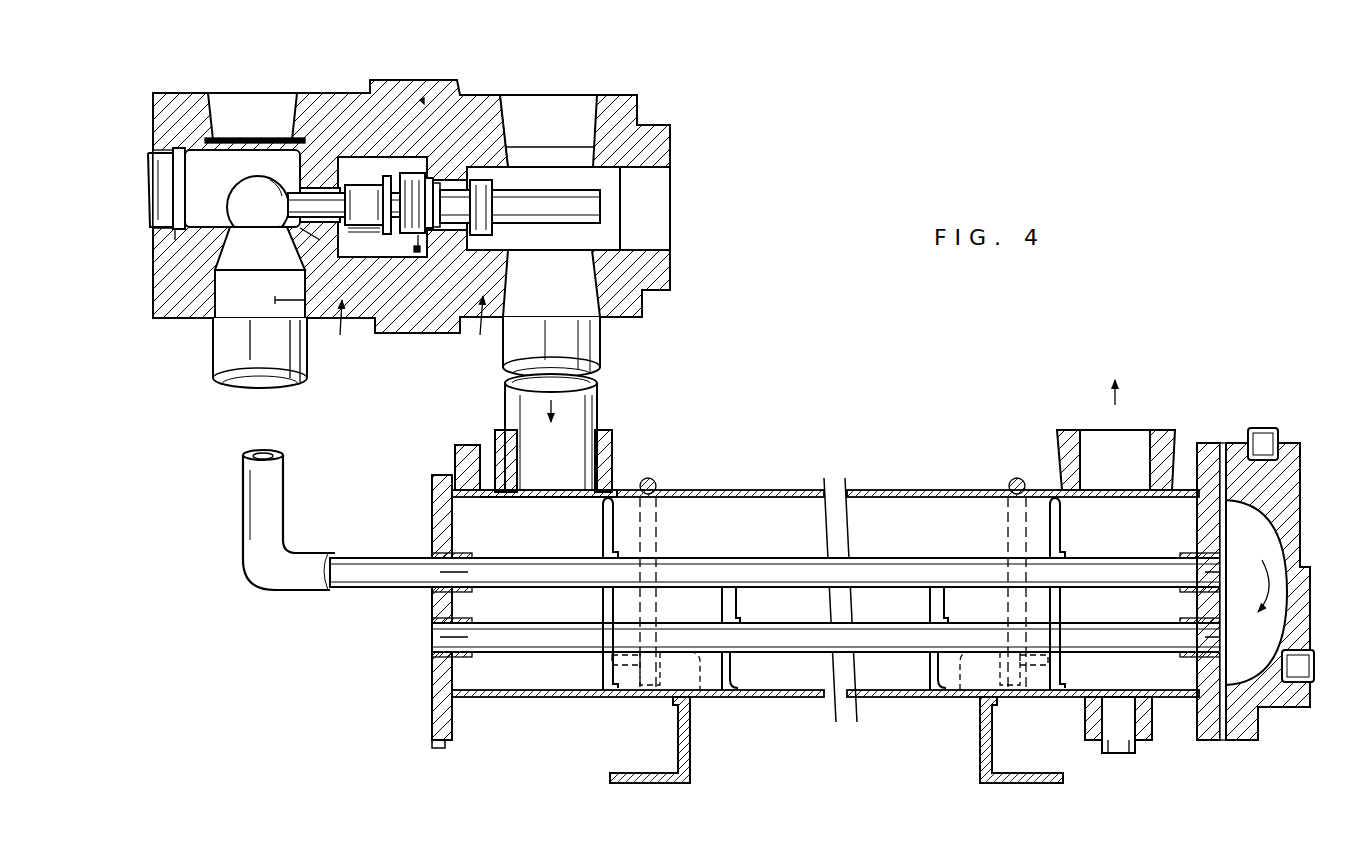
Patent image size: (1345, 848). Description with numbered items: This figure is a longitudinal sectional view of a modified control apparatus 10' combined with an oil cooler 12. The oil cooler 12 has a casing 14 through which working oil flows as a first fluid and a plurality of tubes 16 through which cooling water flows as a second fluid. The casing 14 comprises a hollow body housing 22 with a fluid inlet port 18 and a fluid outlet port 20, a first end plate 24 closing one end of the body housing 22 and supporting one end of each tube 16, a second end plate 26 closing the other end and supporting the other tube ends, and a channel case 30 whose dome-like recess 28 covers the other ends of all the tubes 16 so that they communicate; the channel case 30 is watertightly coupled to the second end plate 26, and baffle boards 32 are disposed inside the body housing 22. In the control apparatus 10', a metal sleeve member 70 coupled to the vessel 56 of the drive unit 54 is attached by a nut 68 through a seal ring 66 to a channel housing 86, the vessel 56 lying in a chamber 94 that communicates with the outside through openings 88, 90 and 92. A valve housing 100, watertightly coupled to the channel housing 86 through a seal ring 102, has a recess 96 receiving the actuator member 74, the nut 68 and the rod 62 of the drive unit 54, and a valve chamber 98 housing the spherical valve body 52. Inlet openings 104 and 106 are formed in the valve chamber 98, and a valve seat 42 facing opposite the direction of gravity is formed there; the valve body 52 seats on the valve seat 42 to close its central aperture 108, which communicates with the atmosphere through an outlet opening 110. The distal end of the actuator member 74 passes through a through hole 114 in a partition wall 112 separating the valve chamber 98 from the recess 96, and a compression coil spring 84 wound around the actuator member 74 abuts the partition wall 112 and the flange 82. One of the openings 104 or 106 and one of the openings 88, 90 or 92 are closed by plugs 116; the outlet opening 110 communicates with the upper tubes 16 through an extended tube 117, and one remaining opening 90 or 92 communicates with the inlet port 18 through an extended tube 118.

The control apparatus 10' is at (426, 308).
The oil cooler 12 is at (834, 581).
The casing 14 is at (765, 490).
The tubes 16 is at (769, 561).
The fluid inlet port 18 is at (585, 453).
The fluid outlet port 20 is at (1091, 436).
The body housing 22 is at (904, 490).
The first end plate 24 is at (442, 479).
The second end plate 26 is at (1198, 442).
The dome-like recess 28 is at (1268, 633).
The channel case 30 is at (1282, 584).
The baffle boards 32 is at (602, 535).
The valve seat 42 is at (260, 294).
The spherical valve body 52 is at (259, 175).
The drive unit 54 is at (586, 188).
The vessel 56 is at (598, 216).
The rod 62 is at (388, 174).
The seal ring 66 is at (432, 180).
The nut 68 is at (418, 252).
The metal sleeve member 70 is at (441, 228).
The actuator member 74 is at (316, 193).
The flange 82 is at (375, 238).
The compression coil spring 84 is at (363, 194).
The channel housing 86 is at (480, 329).
The opening 88 is at (512, 160).
The opening 90 is at (670, 230).
The opening 92 is at (586, 282).
The chamber 94 is at (496, 240).
The recess 96 is at (335, 166).
The valve chamber 98 is at (207, 152).
The valve housing 100 is at (342, 332).
The seal ring 102 is at (424, 114).
The inlet opening 104 is at (157, 228).
The inlet opening 106 is at (218, 110).
The central aperture 108 is at (252, 242).
The outlet opening 110 is at (260, 300).
The partition wall 112 is at (340, 238).
The through hole 114 is at (310, 238).
The plugs 116 is at (160, 168).
The extended tube 117 is at (222, 352).
The extended tube 118 is at (600, 338).